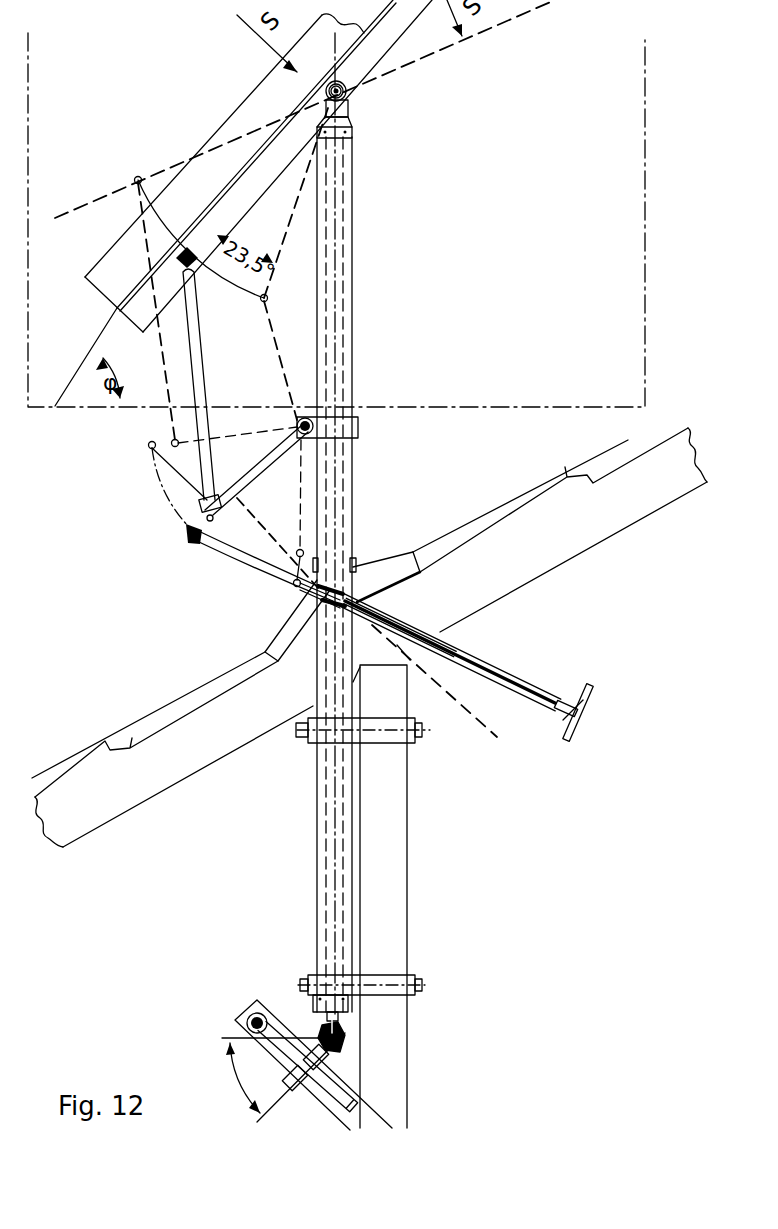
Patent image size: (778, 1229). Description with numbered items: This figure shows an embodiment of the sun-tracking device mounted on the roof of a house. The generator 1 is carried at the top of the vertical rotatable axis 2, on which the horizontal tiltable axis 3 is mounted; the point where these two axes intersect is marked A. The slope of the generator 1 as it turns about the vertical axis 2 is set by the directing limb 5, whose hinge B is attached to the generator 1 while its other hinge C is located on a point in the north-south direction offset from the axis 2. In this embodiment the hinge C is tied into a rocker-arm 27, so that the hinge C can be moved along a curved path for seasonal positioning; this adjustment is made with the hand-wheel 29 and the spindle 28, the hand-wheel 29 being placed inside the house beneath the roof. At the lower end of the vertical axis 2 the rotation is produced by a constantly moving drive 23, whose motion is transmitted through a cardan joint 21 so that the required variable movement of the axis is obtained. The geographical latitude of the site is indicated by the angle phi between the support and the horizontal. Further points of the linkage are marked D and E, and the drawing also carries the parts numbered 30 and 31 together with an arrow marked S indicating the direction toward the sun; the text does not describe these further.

The generator 1 is at (383, 45).
The vertical rotatable axis 2 is at (336, 318).
The horizontal tiltable axis 3 is at (352, 102).
The directing limb 5 is at (200, 392).
The cardan joint 21 is at (345, 1040).
The constantly moving drive 23 is at (318, 1040).
The rocker-arm 27 is at (247, 487).
The spindle 28 is at (500, 673).
The hand-wheel 29 is at (588, 710).
The inner tube 30 is at (345, 878).
The arm 31 is at (283, 88).
The intersection of the axes A is at (352, 97).
The hinge B of the directing limb B is at (176, 259).
The hinge C of the directing limb C is at (197, 530).
The pivot point D is at (306, 427).
The pivot point E is at (347, 580).